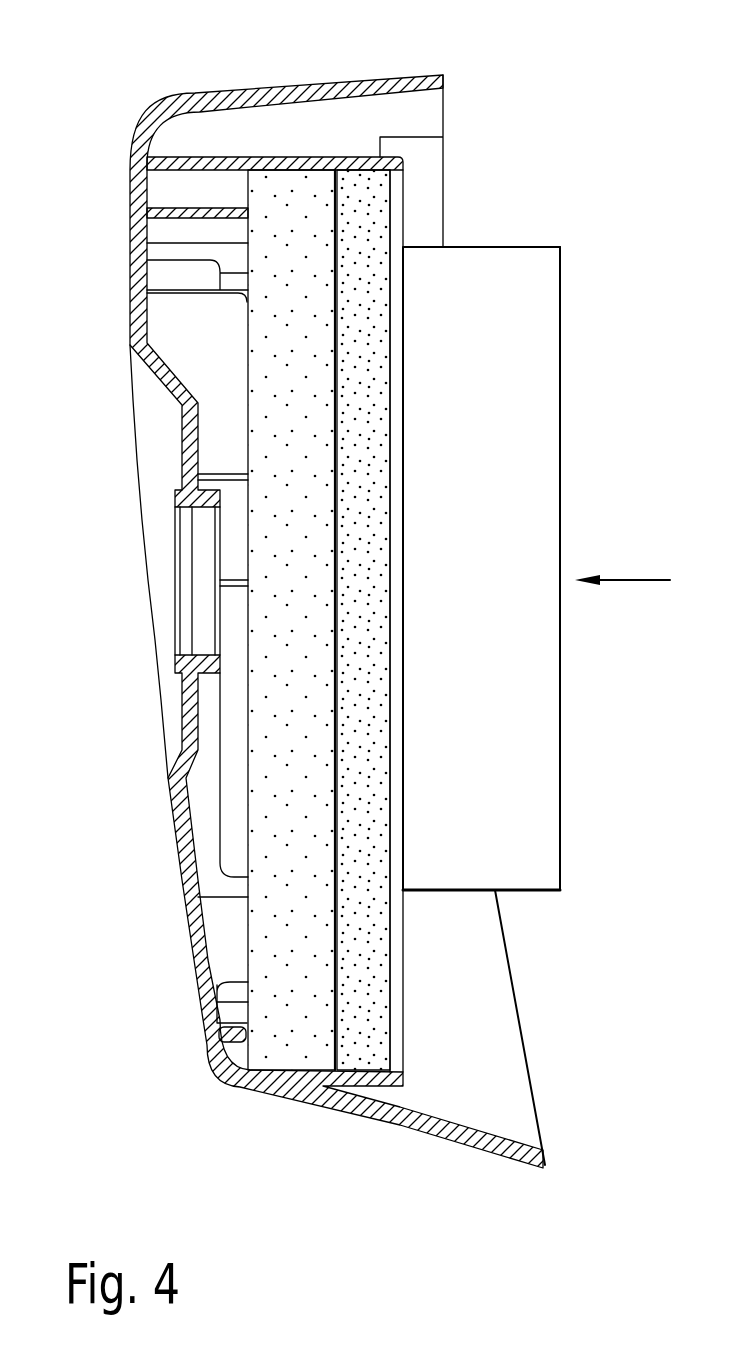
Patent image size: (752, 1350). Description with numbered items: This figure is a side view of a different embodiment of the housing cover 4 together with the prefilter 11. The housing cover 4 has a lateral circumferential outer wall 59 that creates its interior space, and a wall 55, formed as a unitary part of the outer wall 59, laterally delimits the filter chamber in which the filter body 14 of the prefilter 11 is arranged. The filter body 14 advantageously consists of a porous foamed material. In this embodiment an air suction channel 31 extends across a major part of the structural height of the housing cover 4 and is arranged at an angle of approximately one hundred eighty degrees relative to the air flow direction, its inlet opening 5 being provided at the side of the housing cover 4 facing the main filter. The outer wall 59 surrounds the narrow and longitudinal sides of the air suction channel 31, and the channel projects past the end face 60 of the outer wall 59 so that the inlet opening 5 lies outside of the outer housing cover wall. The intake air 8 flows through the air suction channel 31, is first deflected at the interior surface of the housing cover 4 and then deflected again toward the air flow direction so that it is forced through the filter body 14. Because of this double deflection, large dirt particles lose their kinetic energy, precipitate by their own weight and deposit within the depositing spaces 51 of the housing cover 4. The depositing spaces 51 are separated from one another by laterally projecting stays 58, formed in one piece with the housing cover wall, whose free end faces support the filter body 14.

The housing cover 4 is at (248, 880).
The inlet opening 5 is at (577, 850).
The intake air 8 is at (647, 580).
The prefilter 11 is at (316, 1052).
The filter body 14 is at (373, 204).
The air suction channel 31 is at (528, 770).
The depositing space 51 is at (223, 973).
The wall 55 is at (300, 157).
The stay 58 is at (250, 985).
The outer wall 59 is at (493, 1150).
The end face 60 is at (539, 1041).